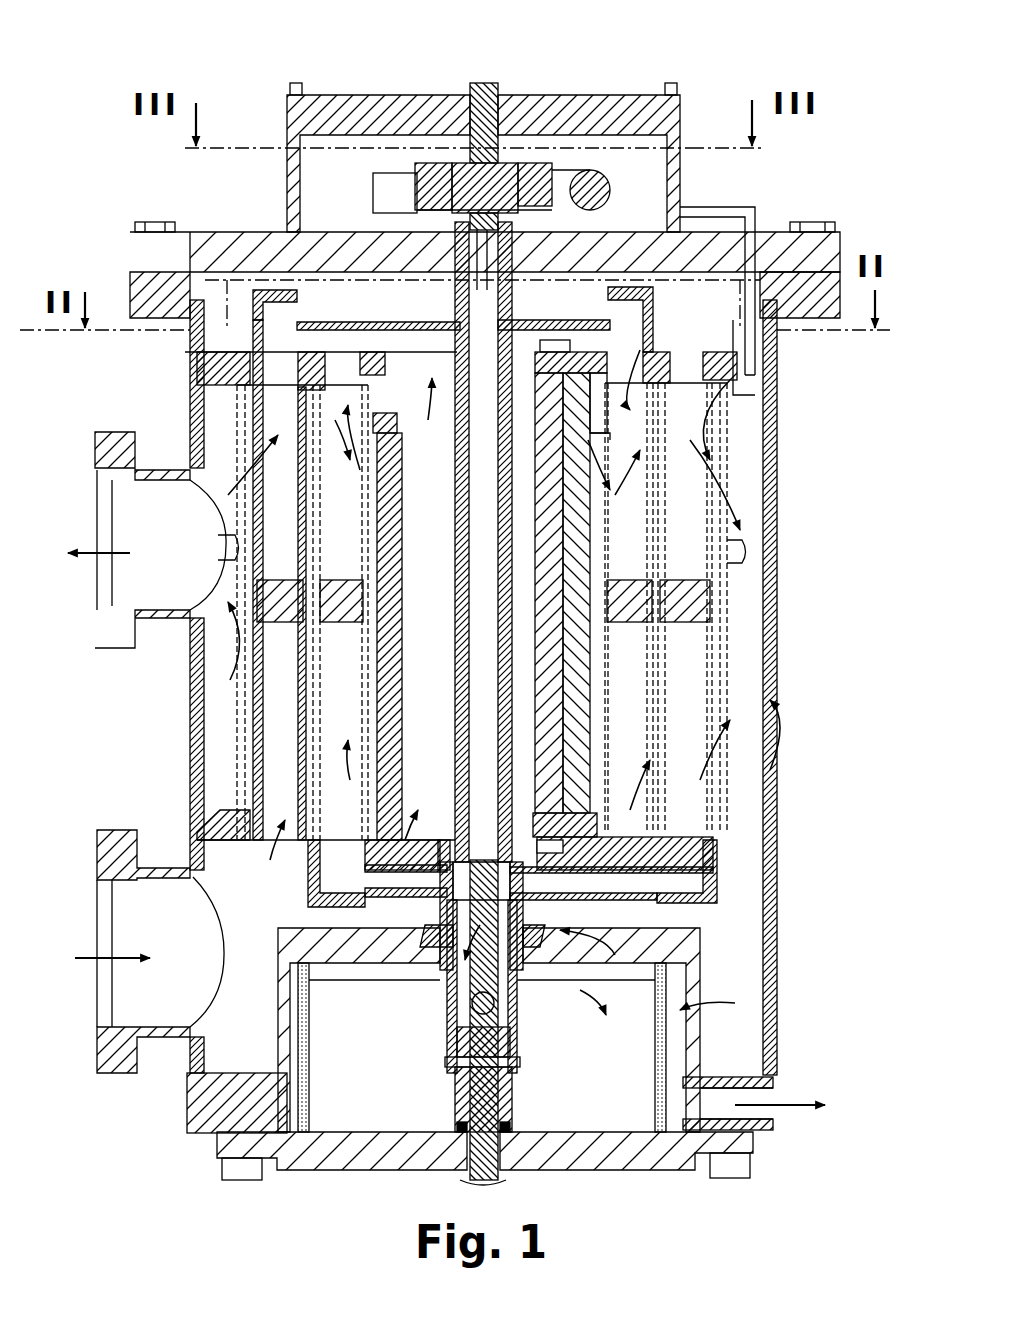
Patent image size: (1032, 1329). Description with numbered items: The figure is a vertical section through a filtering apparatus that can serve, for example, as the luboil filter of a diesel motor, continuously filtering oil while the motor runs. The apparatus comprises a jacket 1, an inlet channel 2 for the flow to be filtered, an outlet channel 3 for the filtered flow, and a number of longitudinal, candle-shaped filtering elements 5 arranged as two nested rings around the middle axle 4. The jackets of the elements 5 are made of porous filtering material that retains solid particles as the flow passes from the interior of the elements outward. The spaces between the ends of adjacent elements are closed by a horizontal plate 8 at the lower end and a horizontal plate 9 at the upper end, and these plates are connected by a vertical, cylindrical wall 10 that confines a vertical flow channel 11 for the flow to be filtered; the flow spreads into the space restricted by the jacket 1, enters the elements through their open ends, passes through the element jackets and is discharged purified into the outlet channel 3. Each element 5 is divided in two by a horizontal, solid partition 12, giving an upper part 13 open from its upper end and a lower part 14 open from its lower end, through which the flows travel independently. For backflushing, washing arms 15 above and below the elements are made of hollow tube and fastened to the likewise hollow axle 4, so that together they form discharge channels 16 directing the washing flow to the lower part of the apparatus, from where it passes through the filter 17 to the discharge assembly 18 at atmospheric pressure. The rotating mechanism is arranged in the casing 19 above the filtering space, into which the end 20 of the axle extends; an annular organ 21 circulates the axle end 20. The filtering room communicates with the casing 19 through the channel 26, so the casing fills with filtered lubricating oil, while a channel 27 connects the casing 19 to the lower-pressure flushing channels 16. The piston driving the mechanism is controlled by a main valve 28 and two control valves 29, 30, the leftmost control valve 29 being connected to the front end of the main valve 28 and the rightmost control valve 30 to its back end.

The jacket 1 is at (777, 528).
The inlet channel 2 is at (120, 998).
The outlet channel 3 is at (125, 600).
The middle axle 4 is at (507, 425).
The candle-shaped filtering elements 5 is at (660, 400).
The horizontal plate 8 is at (215, 855).
The horizontal plate 9 is at (215, 354).
The vertical cylindrical wall 10 is at (400, 738).
The vertical flow channel 11 is at (420, 702).
The horizontal solid partition 12 is at (605, 620).
The upper part 13 is at (680, 567).
The lower part 14 is at (680, 668).
The washing arms 15 is at (365, 297).
The discharge channels 16 is at (553, 310).
The filter 17 is at (657, 993).
The discharge assembly 18 is at (735, 1092).
The casing 19 is at (687, 145).
The end of the axle 20 is at (480, 95).
The annular organ 21 is at (433, 168).
The channel 26 is at (755, 210).
The channel 27 is at (516, 160).
The main valve 28 is at (588, 178).
The control valve 29 is at (385, 180).
The control valve 30 is at (570, 178).